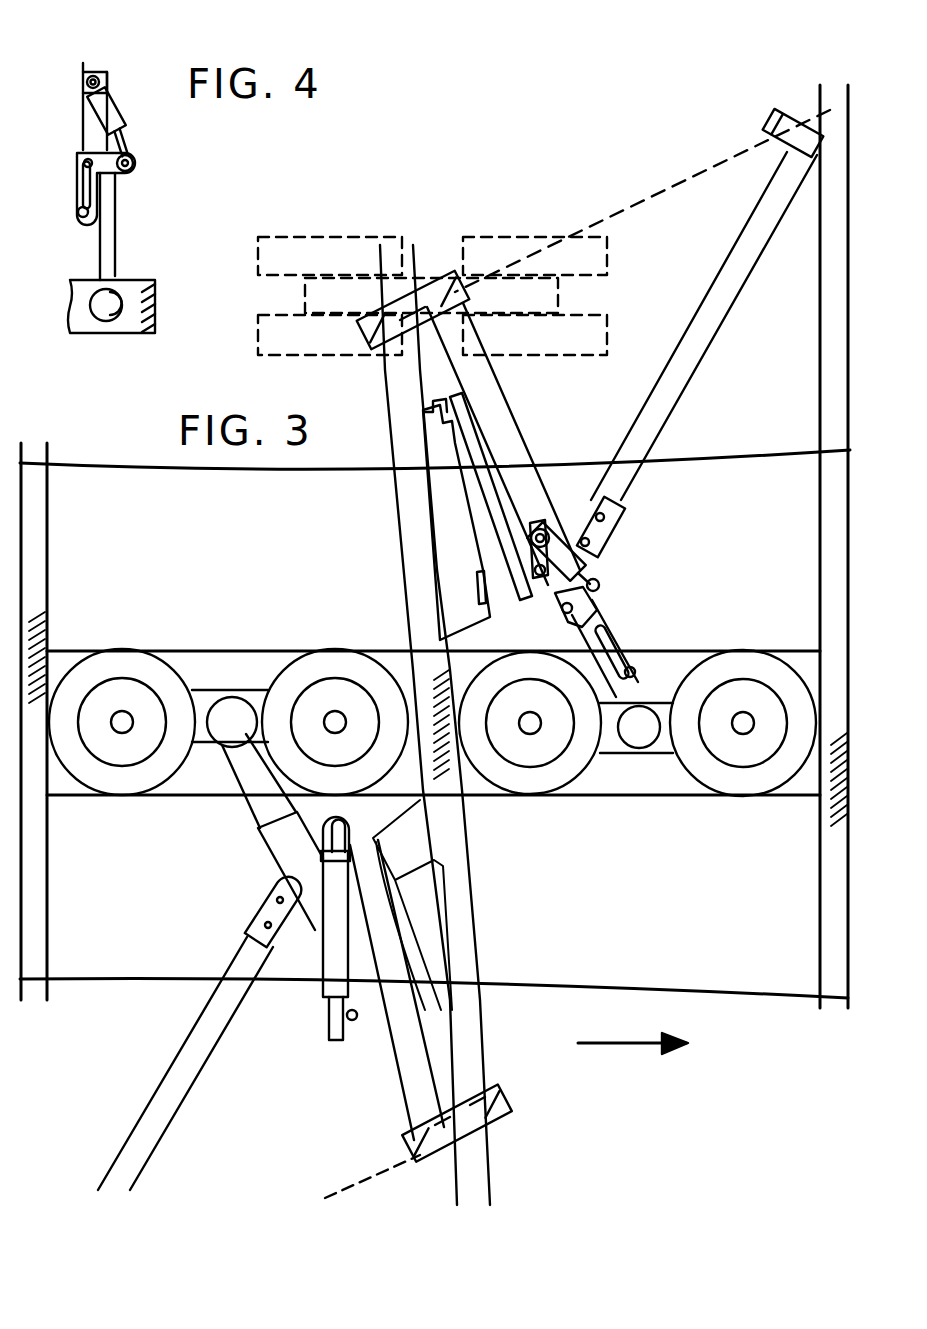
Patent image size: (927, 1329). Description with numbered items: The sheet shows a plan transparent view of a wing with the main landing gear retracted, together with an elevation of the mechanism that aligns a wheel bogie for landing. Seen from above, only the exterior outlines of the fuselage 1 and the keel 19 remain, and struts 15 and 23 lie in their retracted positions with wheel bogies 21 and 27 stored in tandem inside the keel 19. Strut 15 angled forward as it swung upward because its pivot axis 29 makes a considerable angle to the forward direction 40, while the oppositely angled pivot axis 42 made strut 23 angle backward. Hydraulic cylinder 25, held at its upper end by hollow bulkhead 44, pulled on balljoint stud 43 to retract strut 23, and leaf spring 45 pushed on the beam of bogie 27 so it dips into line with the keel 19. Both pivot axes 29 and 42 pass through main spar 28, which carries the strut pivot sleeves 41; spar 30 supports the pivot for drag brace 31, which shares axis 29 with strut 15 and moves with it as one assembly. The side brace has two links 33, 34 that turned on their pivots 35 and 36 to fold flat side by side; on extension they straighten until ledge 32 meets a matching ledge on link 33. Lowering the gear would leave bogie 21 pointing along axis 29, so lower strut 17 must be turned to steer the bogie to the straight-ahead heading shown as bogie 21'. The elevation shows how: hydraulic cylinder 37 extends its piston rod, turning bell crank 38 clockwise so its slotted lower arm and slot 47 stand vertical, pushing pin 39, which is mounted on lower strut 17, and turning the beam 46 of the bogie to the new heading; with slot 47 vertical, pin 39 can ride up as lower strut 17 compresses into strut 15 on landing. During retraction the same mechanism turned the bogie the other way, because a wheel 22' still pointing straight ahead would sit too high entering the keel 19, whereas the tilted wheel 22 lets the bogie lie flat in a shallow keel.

In FIG. 3, the fuselage 1 is at (737, 998).
In FIG. 4, the strut 15 is at (122, 66).
In FIG. 3, the strut 15 is at (512, 415).
In FIG. 4, the lower strut 17 is at (116, 253).
In FIG. 3, the lower strut 17 is at (608, 753).
In FIG. 3, the keel 19 is at (398, 648).
In FIG. 3, the wheel bogie 21 is at (663, 803).
In FIG. 3, the bogie heading 21' is at (413, 264).
In FIG. 3, the wheel 22 is at (743, 743).
In FIG. 3, the wheel in straight-ahead position 22' is at (562, 296).
In FIG. 3, the strut 23 is at (375, 1068).
In FIG. 3, the hydraulic cylinder 25 is at (337, 928).
In FIG. 3, the wheel bogie 27 is at (208, 671).
In FIG. 3, the main spar 28 is at (385, 400).
In FIG. 3, the pivot axis 29 is at (642, 201).
In FIG. 3, the spar 30 is at (818, 243).
In FIG. 3, the drag brace 31 is at (725, 328).
In FIG. 3, the ledge 32 is at (436, 410).
In FIG. 3, the link 33 is at (495, 507).
In FIG. 3, the link 34 is at (462, 530).
In FIG. 3, the pivot 35 is at (480, 593).
In FIG. 3, the pivot 36 is at (536, 572).
In FIG. 4, the hydraulic cylinder 37 is at (103, 112).
In FIG. 3, the hydraulic cylinder 37 is at (567, 563).
In FIG. 4, the bell crank 38 is at (90, 176).
In FIG. 3, the bell crank 38 is at (600, 606).
In FIG. 4, the pin 39 is at (80, 214).
In FIG. 3, the pin 39 is at (640, 664).
In FIG. 3, the forward direction 40 is at (630, 1047).
In FIG. 3, the strut pivot sleeve 41 is at (443, 1163).
In FIG. 3, the pivot axis 42 is at (375, 1173).
In FIG. 3, the balljoint stud 43 is at (326, 1020).
In FIG. 3, the hollow bulkhead 44 is at (315, 873).
In FIG. 3, the leaf spring 45 is at (220, 747).
In FIG. 4, the beam 46 is at (77, 331).
In FIG. 3, the beam 46 is at (305, 285).
In FIG. 4, the slot 47 is at (86, 218).